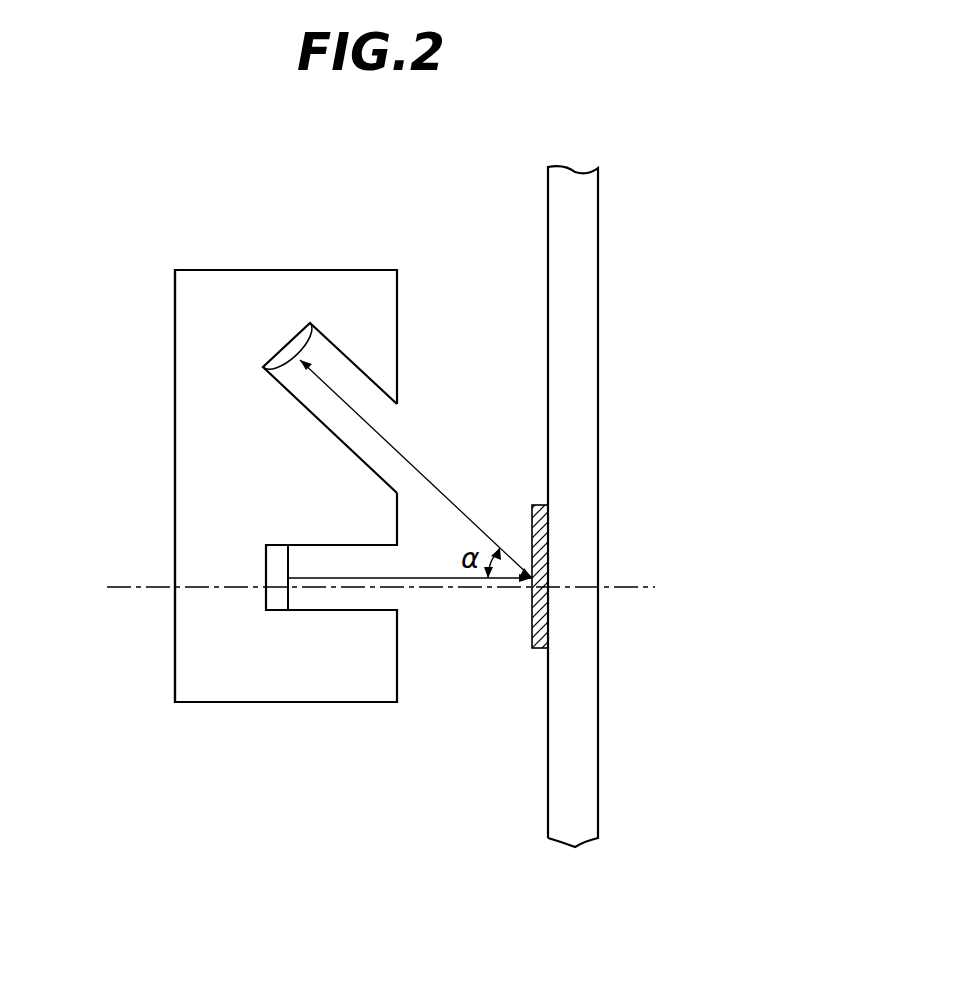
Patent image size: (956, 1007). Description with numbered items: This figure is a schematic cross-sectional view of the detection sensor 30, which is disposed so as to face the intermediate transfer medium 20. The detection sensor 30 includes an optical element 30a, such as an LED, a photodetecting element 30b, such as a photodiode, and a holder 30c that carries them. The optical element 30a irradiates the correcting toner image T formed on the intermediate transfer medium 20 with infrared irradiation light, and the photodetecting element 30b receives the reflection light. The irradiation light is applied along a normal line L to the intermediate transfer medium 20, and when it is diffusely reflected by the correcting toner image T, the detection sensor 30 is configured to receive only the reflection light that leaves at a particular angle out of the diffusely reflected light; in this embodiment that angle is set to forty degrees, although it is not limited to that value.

The intermediate transfer medium 20 is at (548, 347).
The detection sensor 30 is at (150, 332).
The optical element 30a is at (282, 568).
The photodetecting element 30b is at (295, 352).
The holder 30c is at (175, 562).
The correcting toner image T is at (532, 635).
The normal line L is at (620, 588).